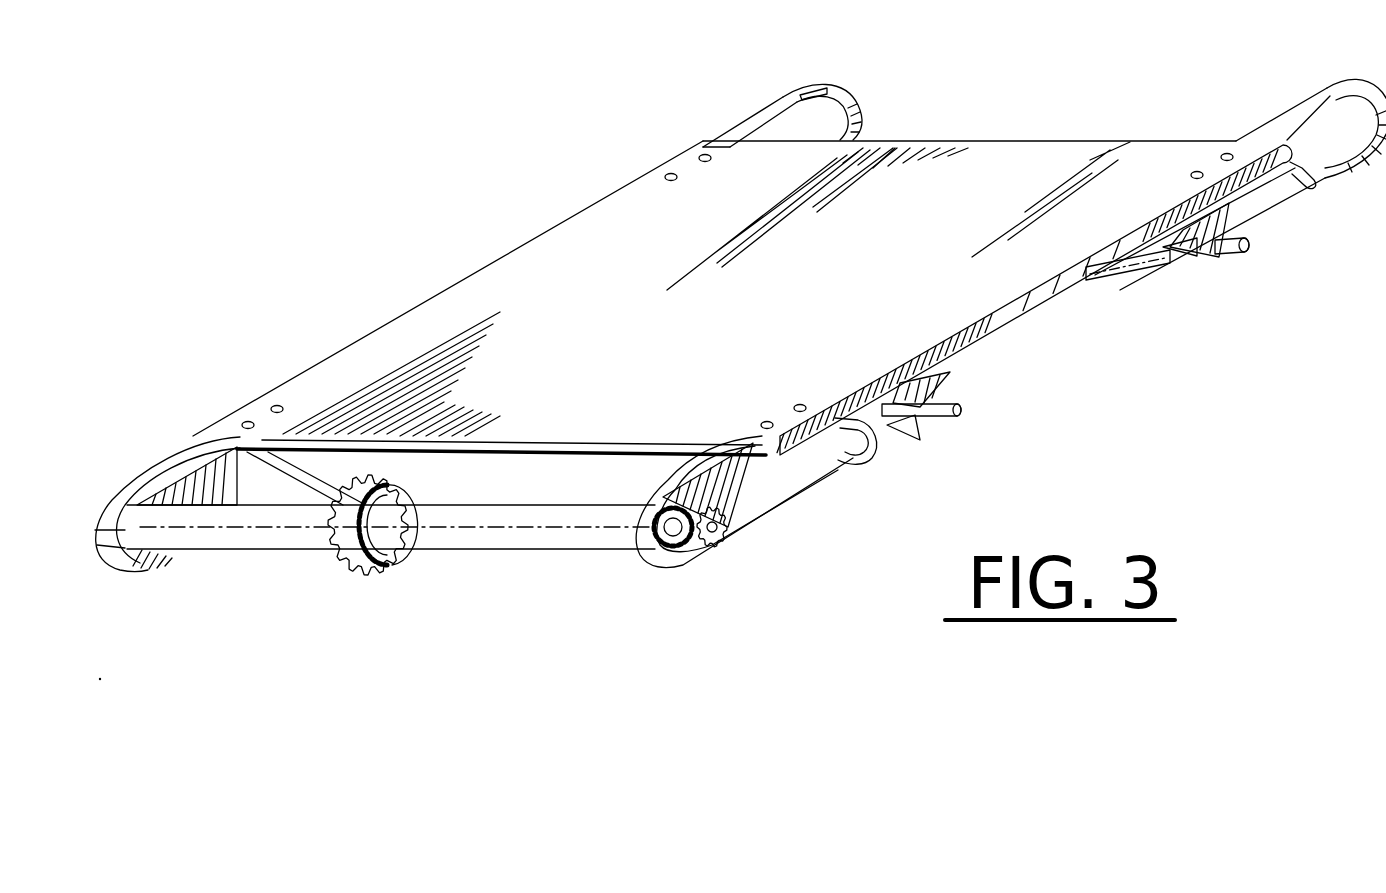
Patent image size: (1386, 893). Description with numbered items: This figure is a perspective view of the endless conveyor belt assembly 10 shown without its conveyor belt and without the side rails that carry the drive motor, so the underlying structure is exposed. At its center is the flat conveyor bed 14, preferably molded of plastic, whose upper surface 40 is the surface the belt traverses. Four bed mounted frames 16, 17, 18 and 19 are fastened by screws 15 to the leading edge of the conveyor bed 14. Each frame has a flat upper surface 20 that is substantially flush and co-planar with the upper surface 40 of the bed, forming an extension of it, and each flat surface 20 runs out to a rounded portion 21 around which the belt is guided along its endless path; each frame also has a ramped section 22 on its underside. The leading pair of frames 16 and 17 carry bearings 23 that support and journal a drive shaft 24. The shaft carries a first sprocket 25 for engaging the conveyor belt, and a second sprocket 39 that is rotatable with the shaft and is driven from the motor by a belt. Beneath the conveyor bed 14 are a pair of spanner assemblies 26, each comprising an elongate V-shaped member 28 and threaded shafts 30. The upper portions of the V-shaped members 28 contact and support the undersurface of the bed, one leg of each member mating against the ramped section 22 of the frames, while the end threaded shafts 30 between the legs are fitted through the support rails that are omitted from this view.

The endless conveyor belt assembly 10 is at (474, 240).
The conveyor bed 14 is at (773, 318).
The screws 15 is at (276, 406).
The bed mounted frame 16 is at (780, 507).
The bed mounted frame 17 is at (119, 492).
The bed mounted frame 18 is at (1311, 201).
The bed mounted frame 19 is at (741, 115).
The flat upper surface 20 is at (168, 472).
The rounded portion 21 is at (862, 110).
The ramped section 22 is at (848, 461).
The bearings 23 is at (142, 574).
The drive shaft 24 is at (498, 522).
The first sprocket 25 is at (363, 574).
The spanner assemblies 26 is at (913, 436).
The V-shaped members 28 is at (950, 374).
The threaded shafts 30 is at (953, 418).
The second sprocket 39 is at (713, 544).
The upper surface 40 is at (350, 362).